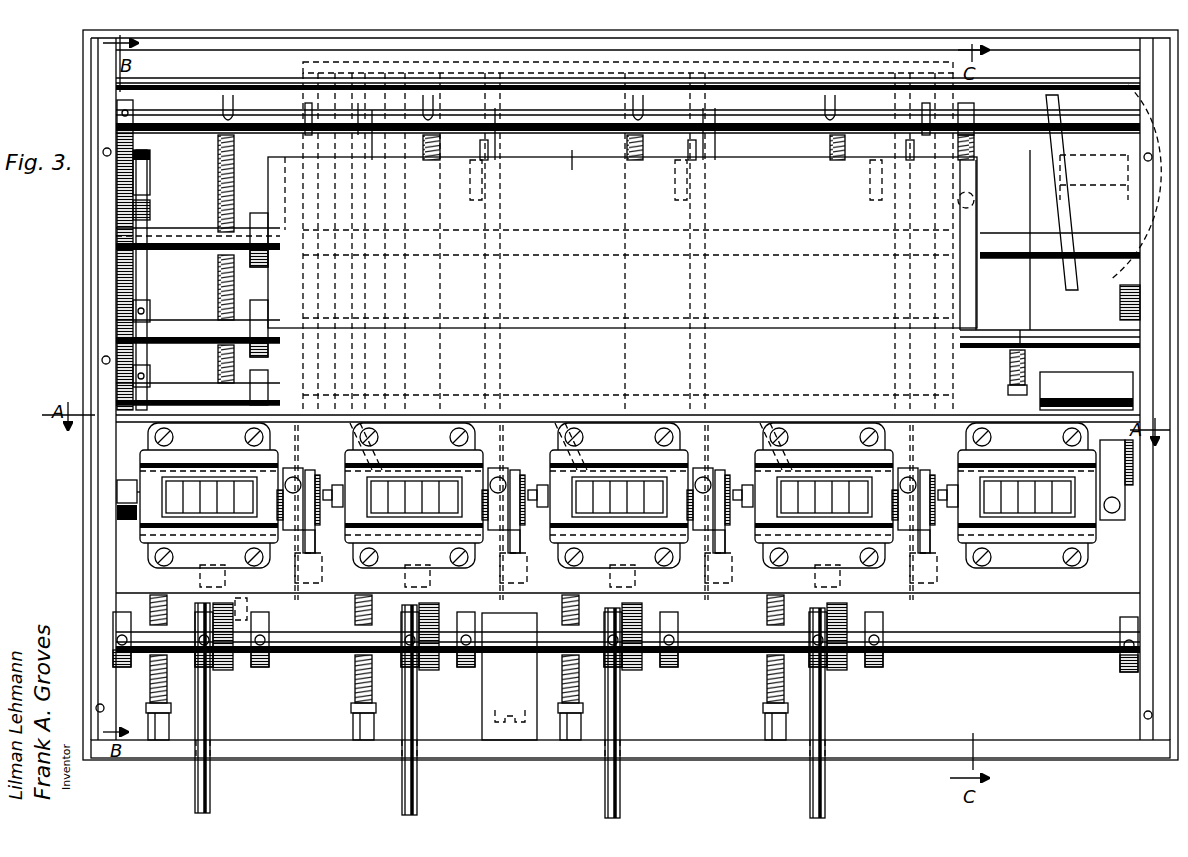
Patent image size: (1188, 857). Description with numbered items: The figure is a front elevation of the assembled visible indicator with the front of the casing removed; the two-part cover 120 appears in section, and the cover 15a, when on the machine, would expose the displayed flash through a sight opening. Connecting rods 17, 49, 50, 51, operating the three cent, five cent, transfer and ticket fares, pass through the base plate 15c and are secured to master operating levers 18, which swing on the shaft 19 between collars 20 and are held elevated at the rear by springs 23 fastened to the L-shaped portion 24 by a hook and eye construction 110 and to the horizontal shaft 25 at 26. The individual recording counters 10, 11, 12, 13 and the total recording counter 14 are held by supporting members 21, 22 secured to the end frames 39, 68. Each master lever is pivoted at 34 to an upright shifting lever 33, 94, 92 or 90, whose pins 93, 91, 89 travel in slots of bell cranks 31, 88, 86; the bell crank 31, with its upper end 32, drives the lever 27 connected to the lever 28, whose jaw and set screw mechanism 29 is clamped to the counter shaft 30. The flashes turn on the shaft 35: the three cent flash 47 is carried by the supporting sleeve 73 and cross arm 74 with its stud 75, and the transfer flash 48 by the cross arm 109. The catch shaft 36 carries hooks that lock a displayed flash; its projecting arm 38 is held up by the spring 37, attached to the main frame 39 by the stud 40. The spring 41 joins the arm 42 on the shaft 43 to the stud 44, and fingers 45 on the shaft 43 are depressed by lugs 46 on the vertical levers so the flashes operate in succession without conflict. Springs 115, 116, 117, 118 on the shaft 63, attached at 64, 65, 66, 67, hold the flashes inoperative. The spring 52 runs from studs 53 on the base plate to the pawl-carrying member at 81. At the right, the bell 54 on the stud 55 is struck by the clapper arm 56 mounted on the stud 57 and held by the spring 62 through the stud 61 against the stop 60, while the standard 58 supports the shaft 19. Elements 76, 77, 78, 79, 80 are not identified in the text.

The individual recording counter 10 is at (145, 545).
The individual recording counter 11 is at (385, 570).
The individual recording counter 12 is at (592, 570).
The individual recording counter 13 is at (808, 570).
The total recording counter 14 is at (1018, 566).
The cover 15a is at (98, 240).
The base plate 15c is at (320, 760).
The connecting rod 17 is at (195, 785).
The master operating lever 18 is at (214, 607).
The shaft 19 is at (306, 656).
The collar 20 is at (200, 668).
The supporting member 21 is at (297, 613).
The supporting member 22 is at (195, 414).
The spring 23 is at (218, 185).
The L-shaped portion 24 is at (191, 441).
The horizontal shaft 25 is at (168, 62).
The spring attachment point 26 is at (218, 128).
The lever 27 is at (312, 470).
The lever 28 is at (296, 466).
The jaw and set screw mechanism 29 is at (288, 556).
The shaft 30 is at (128, 479).
The bell crank 31 is at (304, 531).
The upper end of bell crank 32 is at (320, 408).
The vertical shifting lever 33 is at (292, 148).
The pivot point 34 is at (200, 582).
The shaft 35 is at (180, 228).
The catch shaft 36 is at (184, 319).
The spring 37 is at (148, 222).
The projecting arm 38 is at (148, 300).
The main frame 39 is at (100, 205).
The stud 40 is at (140, 166).
The spring 41 is at (117, 278).
The extending arm 42 is at (152, 380).
The shaft 43 is at (192, 352).
The stud 44 is at (116, 115).
The finger 45 is at (278, 372).
The lug 46 is at (247, 283).
The three cent flash 47 is at (559, 153).
The transfer flash 48 is at (379, 327).
The connecting rod 49 is at (402, 782).
The connecting rod 50 is at (605, 786).
The connecting rod 51 is at (810, 786).
The spring 52 is at (355, 612).
The stud 53 is at (146, 722).
The bell 54 is at (1030, 202).
The stud 55 is at (1072, 168).
The clapper arm 56 is at (1052, 172).
The stud 57 is at (1097, 380).
The standard 58 is at (482, 690).
The stop 60 is at (1122, 298).
The stud 61 is at (1033, 345).
The spring 62 is at (1009, 374).
The shaft 63 is at (391, 172).
The spring attachment point 64 is at (310, 171).
The spring attachment point 65 is at (347, 179).
The spring attachment point 66 is at (908, 160).
The spring attachment point 67 is at (945, 160).
The side frame 68 is at (1140, 575).
The supporting sleeve 73 is at (290, 203).
The cross arm 74 is at (976, 185).
The stud 75 is at (508, 162).
The lever 76 is at (395, 198).
The pin 77 is at (458, 166).
The lever 78 is at (580, 215).
The pin 79 is at (686, 152).
The lever 80 is at (358, 242).
The spring attachment point 81 is at (703, 540).
The bell crank 86 is at (912, 540).
The bell crank 88 is at (500, 540).
The pin 89 is at (882, 418).
The upright lever 90 is at (895, 170).
The pin 91 is at (698, 418).
The upright lever 92 is at (716, 147).
The pin 93 is at (470, 428).
The upright lever 94 is at (500, 145).
The cross arm 109 is at (300, 158).
The hook and eye construction 110 is at (418, 468).
The spring 115 is at (285, 176).
The spring 116 is at (380, 135).
The spring 117 is at (905, 130).
The spring 118 is at (974, 147).
The cover 120 is at (110, 33).